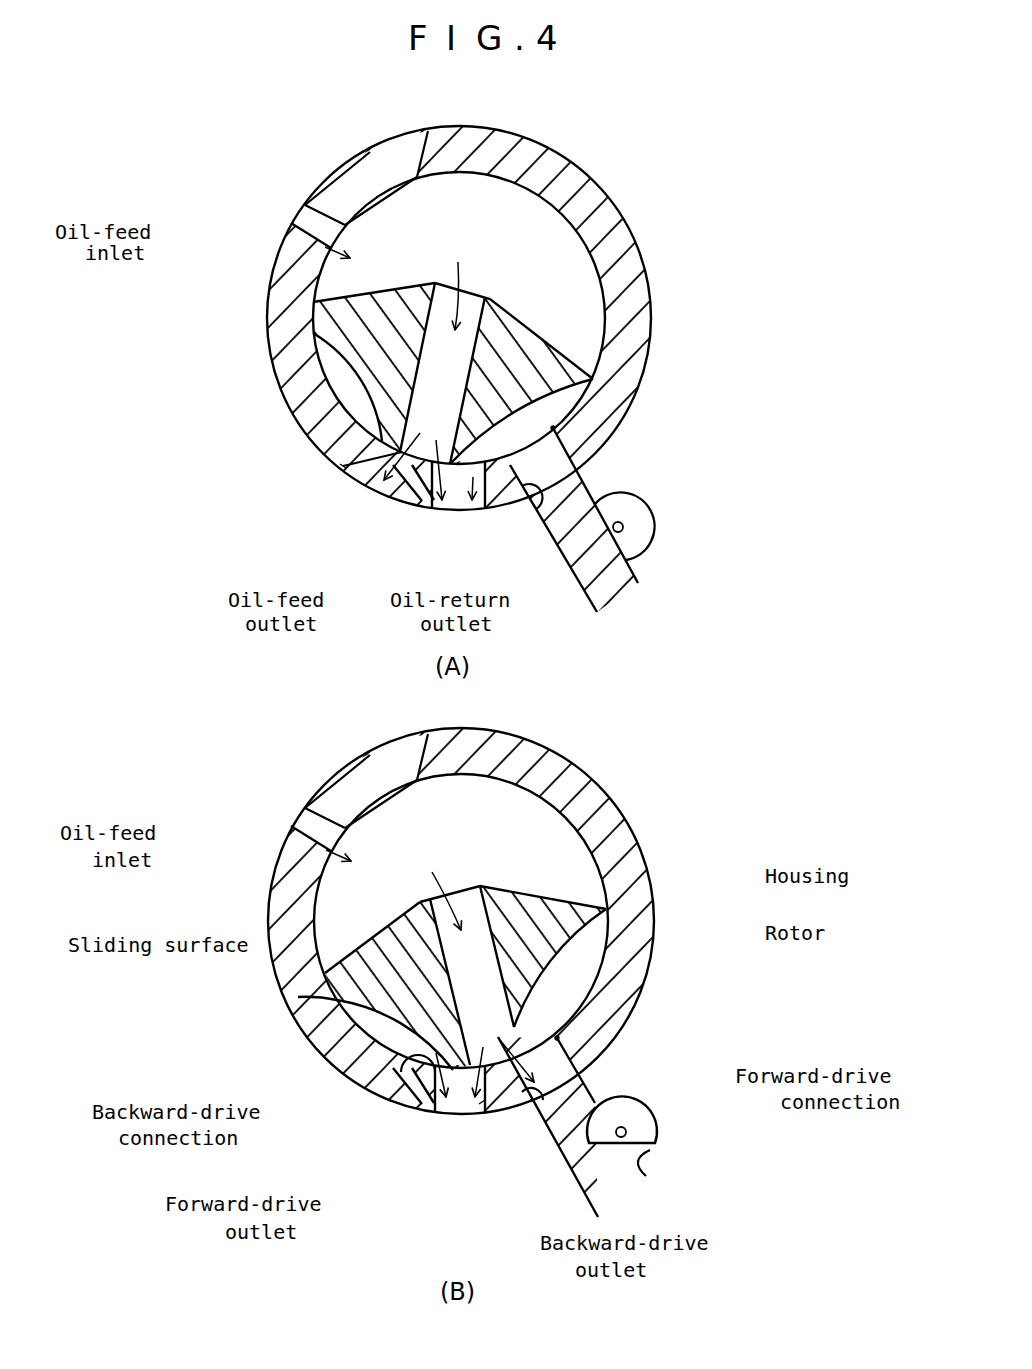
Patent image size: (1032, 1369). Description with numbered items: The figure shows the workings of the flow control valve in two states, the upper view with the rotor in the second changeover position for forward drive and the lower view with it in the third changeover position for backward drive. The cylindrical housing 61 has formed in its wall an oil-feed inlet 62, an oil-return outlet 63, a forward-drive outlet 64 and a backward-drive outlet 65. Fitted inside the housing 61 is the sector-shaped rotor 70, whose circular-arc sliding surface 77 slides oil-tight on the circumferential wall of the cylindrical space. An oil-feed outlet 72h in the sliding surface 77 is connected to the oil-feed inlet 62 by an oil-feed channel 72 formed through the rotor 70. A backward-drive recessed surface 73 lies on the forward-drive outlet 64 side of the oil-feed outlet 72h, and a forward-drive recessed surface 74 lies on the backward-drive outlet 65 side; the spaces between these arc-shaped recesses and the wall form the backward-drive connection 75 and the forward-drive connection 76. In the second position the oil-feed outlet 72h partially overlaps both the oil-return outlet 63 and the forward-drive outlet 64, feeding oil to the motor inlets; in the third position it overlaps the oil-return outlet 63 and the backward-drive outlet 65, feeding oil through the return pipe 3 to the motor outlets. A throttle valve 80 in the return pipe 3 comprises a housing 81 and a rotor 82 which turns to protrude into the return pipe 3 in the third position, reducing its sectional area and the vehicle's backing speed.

The return pipe 3 is at (638, 583).
The housing 61 is at (613, 318).
The oil-feed inlet 62 is at (315, 242).
The oil-return outlet 63 is at (458, 508).
The forward-drive outlet 64 is at (383, 487).
The backward-drive outlet 65 is at (540, 500).
The rotor 70 is at (565, 358).
The oil-feed channel 72 is at (476, 297).
The oil-feed outlet 72h is at (350, 470).
The backward-drive recessed surface 73 is at (352, 405).
The forward-drive recessed surface 74 is at (540, 423).
The backward-drive connection 75 is at (343, 466).
The forward-drive connection 76 is at (555, 430).
The sliding surface 77 is at (312, 303).
The throttle valve 80 is at (699, 842).
The housing 81 is at (696, 1164).
The rotor 82 is at (640, 524).